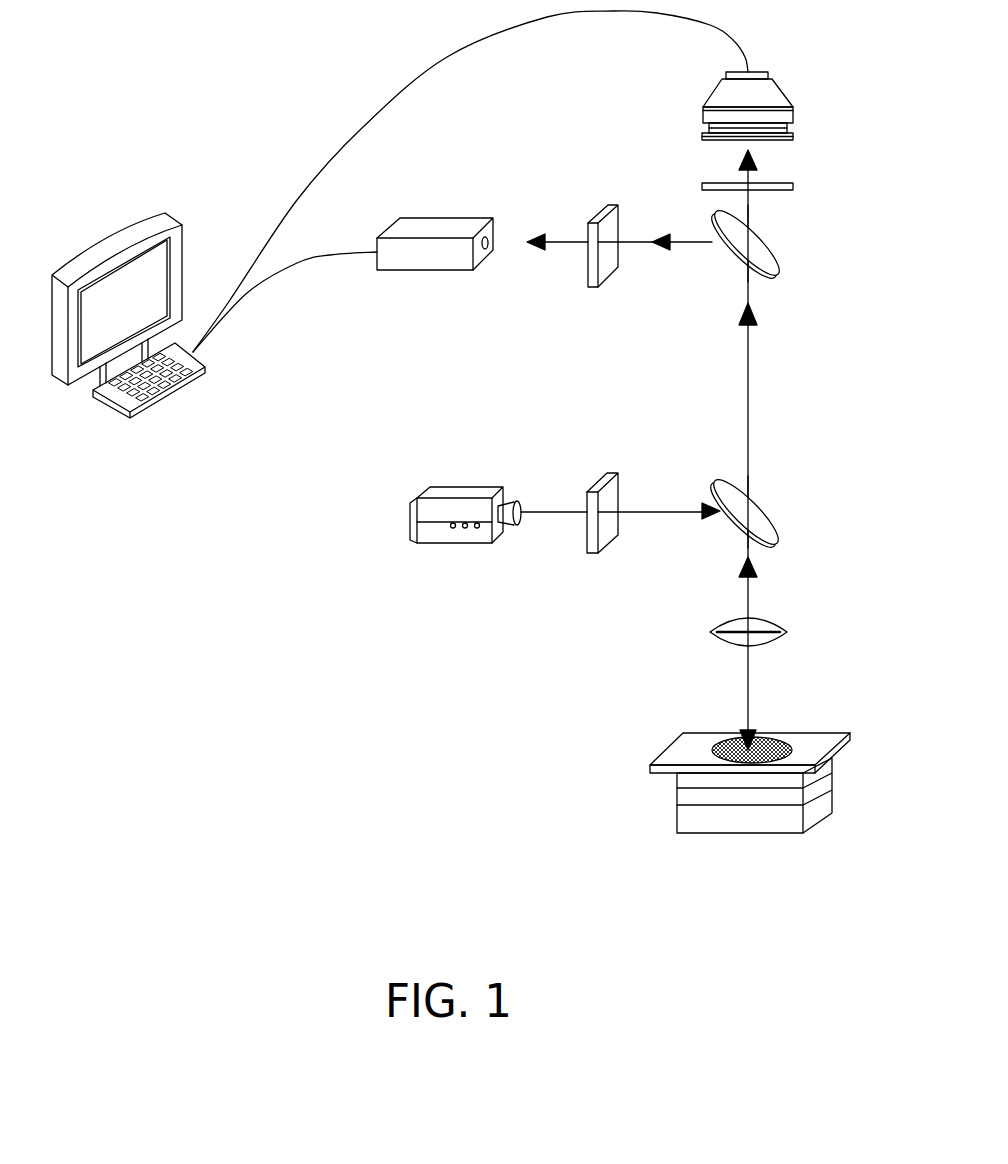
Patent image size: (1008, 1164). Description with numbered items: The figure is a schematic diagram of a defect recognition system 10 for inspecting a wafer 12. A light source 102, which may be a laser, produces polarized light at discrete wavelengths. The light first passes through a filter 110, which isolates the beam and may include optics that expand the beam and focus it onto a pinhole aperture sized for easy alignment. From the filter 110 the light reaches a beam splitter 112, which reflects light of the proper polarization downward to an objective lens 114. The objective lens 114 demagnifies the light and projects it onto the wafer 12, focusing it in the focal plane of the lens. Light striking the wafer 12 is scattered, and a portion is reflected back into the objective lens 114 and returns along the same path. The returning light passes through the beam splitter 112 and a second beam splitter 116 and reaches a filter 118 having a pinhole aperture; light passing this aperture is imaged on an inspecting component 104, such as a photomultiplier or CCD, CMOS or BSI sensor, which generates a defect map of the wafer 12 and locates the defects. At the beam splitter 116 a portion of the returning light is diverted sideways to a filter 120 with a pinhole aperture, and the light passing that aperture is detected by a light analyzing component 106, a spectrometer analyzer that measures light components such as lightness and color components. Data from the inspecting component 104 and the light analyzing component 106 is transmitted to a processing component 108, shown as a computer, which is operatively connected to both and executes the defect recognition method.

The defect recognition system 10 is at (865, 918).
The wafer 12 is at (778, 735).
The light source 102 is at (452, 543).
The inspecting component 104 is at (708, 92).
The light analyzing component 106 is at (415, 270).
The processing component 108 is at (173, 397).
The filter 110 is at (593, 553).
The beam splitter 112 is at (778, 544).
The objective lens 114 is at (787, 632).
The beam splitter 116 is at (776, 276).
The filter 118 is at (793, 188).
The filter 120 is at (593, 287).